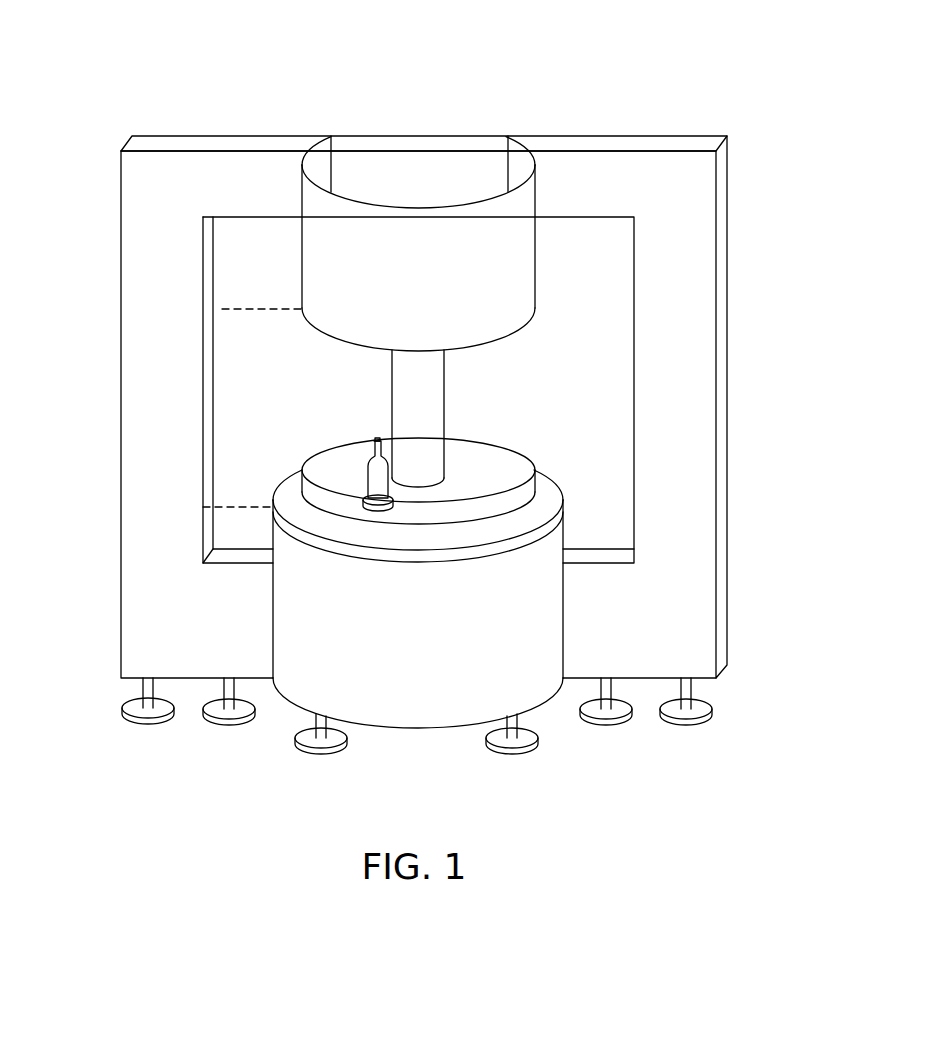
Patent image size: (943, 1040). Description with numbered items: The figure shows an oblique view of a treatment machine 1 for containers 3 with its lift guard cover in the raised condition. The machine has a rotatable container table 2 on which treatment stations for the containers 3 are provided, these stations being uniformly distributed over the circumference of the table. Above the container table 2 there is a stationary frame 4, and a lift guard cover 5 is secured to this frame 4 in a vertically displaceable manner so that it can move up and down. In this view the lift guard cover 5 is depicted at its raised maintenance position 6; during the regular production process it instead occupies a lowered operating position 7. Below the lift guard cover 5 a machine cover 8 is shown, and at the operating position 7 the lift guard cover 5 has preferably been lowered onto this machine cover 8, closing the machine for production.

The treatment machine 1 is at (729, 82).
The rotatable container table 2 is at (530, 503).
The containers 3 is at (375, 440).
The stationary frame 4 is at (687, 175).
The lift guard cover 5 is at (315, 207).
The raised maintenance position 6 is at (224, 309).
The lowered operating position 7 is at (205, 507).
The machine cover 8 is at (533, 688).